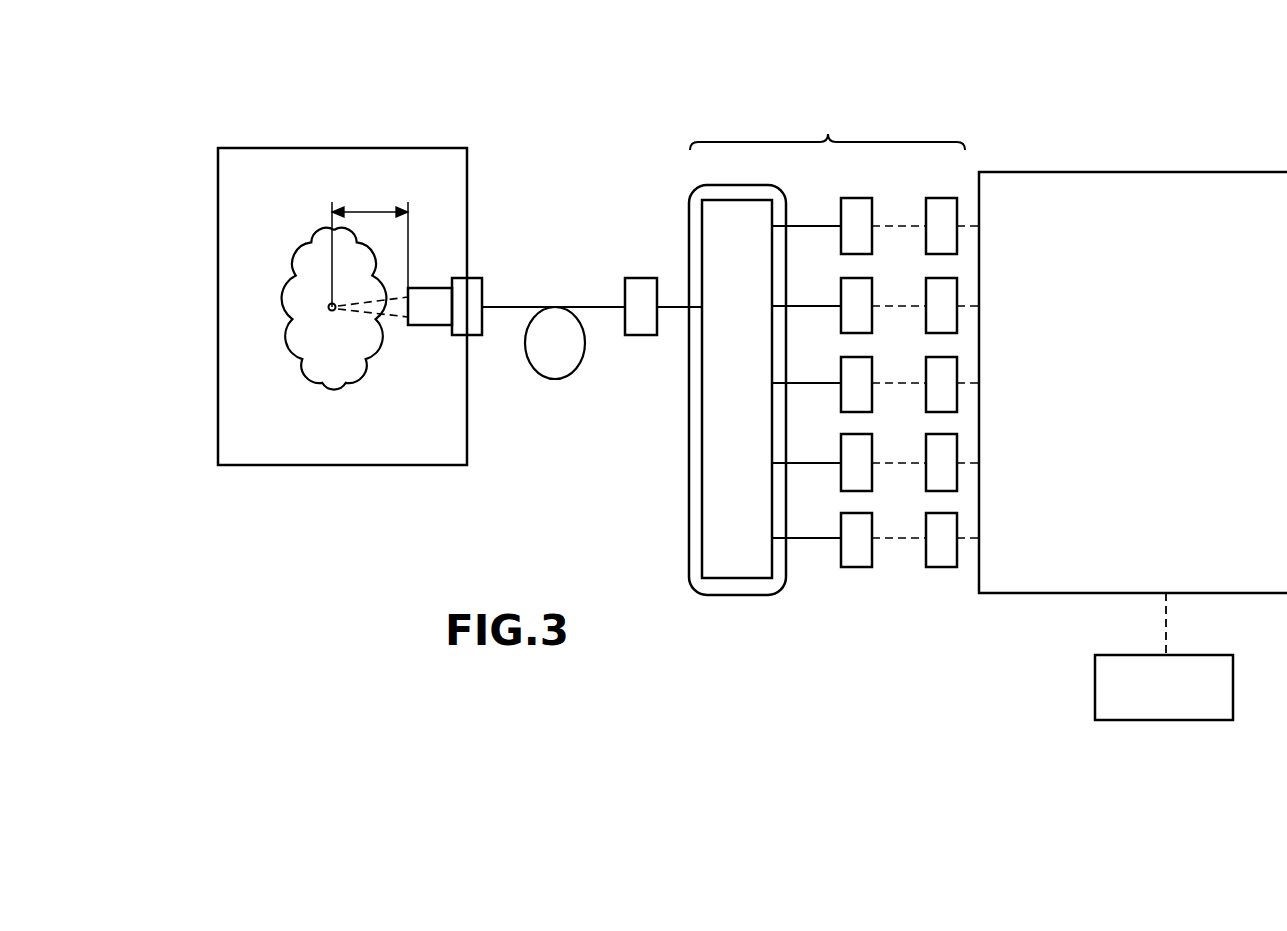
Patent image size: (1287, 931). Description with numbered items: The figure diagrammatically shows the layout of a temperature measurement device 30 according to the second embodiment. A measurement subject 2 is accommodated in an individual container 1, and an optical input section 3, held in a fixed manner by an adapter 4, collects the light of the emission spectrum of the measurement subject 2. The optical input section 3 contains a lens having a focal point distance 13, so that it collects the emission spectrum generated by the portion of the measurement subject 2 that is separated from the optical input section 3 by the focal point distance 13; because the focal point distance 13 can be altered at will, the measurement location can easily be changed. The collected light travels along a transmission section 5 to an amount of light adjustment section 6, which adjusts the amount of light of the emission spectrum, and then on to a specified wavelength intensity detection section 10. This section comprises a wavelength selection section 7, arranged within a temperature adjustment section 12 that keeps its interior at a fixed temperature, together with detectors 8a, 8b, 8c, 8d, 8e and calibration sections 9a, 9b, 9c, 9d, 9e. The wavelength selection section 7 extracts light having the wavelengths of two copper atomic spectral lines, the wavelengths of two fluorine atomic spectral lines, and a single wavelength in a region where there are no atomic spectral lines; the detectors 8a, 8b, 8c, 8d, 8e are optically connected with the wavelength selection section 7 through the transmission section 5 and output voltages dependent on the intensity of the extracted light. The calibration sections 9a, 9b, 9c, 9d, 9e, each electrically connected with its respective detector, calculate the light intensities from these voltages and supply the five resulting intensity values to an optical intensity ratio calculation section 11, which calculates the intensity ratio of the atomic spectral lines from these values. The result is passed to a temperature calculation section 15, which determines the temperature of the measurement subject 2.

The temperature measurement device 30 is at (560, 95).
The individual container 1 is at (352, 148).
The measurement subject 2 is at (312, 246).
The focal point distance 13 is at (370, 245).
The optical input section 3 is at (438, 288).
The adapter 4 is at (482, 278).
The transmission section 5 is at (586, 305).
The amount of light adjustment section 6 is at (640, 278).
The temperature adjustment section 12 is at (689, 214).
The wavelength selection section 7 is at (735, 578).
The specified wavelength intensity detection section 10 is at (827, 126).
The detector 8a is at (858, 198).
The detector 8b is at (872, 283).
The detector 8c is at (872, 388).
The detector 8d is at (841, 475).
The detector 8e is at (856, 567).
The calibration section 9a is at (943, 198).
The calibration section 9b is at (926, 318).
The calibration section 9c is at (926, 392).
The calibration section 9d is at (926, 475).
The calibration section 9e is at (941, 567).
The optical intensity ratio calculation section 11 is at (1137, 172).
The temperature calculation section 15 is at (1192, 720).